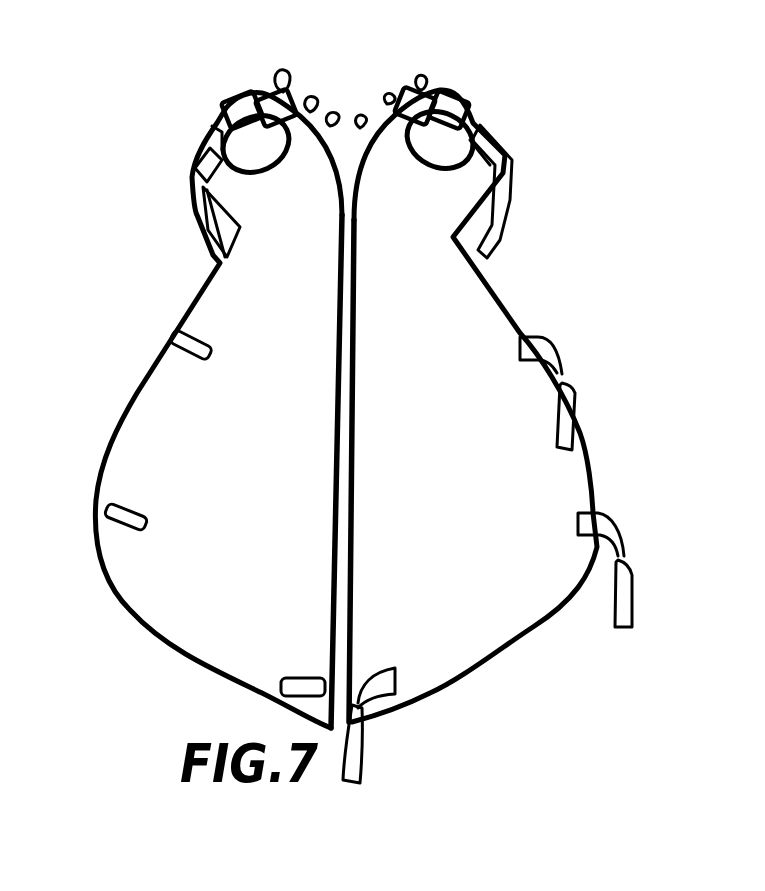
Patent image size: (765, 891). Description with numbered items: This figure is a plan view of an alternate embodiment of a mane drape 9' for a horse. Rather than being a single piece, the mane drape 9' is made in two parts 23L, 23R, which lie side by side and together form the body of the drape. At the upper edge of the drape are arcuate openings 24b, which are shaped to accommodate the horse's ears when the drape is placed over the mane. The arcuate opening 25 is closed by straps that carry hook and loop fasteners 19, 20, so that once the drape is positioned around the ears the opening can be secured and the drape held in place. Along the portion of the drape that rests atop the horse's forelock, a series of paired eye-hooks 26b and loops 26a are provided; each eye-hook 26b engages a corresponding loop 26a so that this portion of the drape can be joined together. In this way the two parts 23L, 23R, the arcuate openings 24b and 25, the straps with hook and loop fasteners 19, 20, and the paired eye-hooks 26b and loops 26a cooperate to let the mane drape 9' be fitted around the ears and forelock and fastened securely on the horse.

The mane drape 9' is at (222, 468).
The hook and loop fastener 19 is at (247, 95).
The hook and loop fastener 20 is at (500, 153).
The left part 23L is at (284, 453).
The right part 23R is at (468, 456).
The arcuate opening 24b is at (207, 123).
The arcuate opening 25 is at (465, 90).
The loops 26a is at (283, 82).
The eye-hooks 26b is at (385, 97).